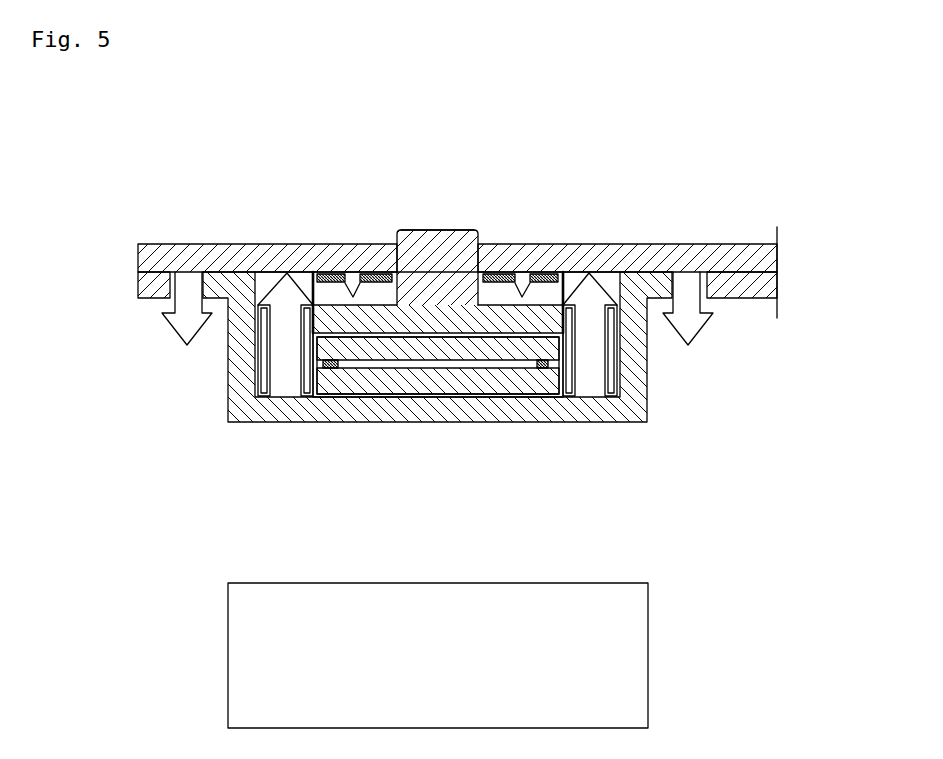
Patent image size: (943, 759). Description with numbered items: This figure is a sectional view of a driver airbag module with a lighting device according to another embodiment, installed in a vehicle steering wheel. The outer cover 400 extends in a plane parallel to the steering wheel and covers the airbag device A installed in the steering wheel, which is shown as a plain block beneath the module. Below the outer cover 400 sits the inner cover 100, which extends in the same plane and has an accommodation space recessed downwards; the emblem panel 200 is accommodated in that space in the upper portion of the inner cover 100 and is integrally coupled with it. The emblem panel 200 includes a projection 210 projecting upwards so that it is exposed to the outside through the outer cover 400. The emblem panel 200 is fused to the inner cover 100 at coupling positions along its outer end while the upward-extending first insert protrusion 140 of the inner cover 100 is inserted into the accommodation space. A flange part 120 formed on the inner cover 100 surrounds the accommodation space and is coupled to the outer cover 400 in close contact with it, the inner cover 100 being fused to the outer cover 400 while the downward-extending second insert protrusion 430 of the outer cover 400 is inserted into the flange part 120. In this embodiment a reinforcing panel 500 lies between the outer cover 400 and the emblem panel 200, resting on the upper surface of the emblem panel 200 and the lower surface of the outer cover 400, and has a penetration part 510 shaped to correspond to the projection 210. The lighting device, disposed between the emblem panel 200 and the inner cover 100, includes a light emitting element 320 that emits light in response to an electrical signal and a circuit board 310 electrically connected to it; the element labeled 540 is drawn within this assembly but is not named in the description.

The inner cover 100 is at (305, 410).
The flange part 120 is at (722, 283).
The first insert protrusion 140 is at (591, 290).
The emblem panel 200 is at (563, 323).
The projection 210 is at (397, 299).
The circuit board 310 is at (407, 388).
The light emitting element 320 is at (543, 372).
The outer cover 400 is at (753, 258).
The second insert protrusion 430 is at (183, 323).
The reinforcing panel 500 is at (503, 268).
The penetration part 510 is at (397, 230).
The circuit element 540 is at (483, 350).
The airbag device A is at (648, 655).